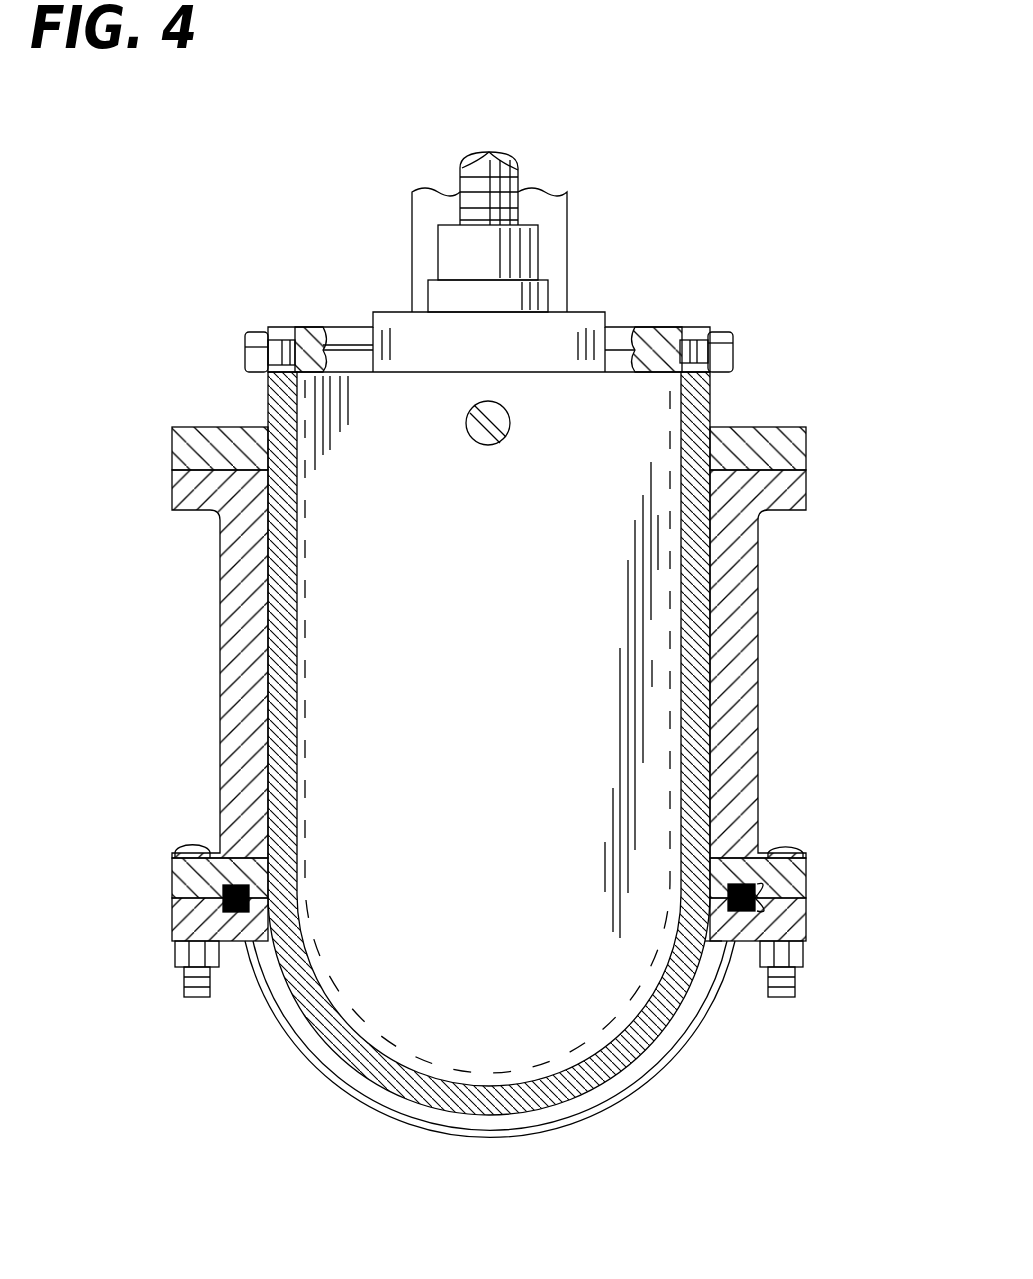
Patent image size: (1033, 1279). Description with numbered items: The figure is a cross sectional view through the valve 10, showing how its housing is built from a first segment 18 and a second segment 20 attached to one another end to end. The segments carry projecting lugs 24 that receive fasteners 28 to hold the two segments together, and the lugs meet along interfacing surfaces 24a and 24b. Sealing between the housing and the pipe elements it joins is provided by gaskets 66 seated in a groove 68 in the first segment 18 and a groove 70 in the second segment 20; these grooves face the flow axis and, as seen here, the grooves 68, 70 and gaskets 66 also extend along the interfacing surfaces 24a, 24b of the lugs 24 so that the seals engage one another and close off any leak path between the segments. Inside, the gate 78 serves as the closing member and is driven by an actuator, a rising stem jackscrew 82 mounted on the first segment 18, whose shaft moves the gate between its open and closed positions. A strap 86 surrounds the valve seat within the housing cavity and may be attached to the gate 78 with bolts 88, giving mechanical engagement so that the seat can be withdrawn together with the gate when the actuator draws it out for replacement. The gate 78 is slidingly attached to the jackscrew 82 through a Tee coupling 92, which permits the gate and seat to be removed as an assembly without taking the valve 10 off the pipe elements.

The valve 10 is at (893, 607).
The first segment 18 is at (745, 697).
The second segment 20 is at (648, 1070).
The lugs 24 is at (808, 880).
The interfacing surface 24a is at (806, 885).
The interfacing surface 24b is at (806, 920).
The fasteners 28 is at (782, 987).
The gaskets 66 is at (752, 883).
The groove 68 is at (740, 883).
The groove 70 is at (727, 947).
The gate 78 is at (497, 819).
The rising stem jackscrew 82 is at (510, 165).
The strap 86 is at (673, 1013).
The bolts 88 is at (724, 343).
The Tee coupling 92 is at (585, 320).